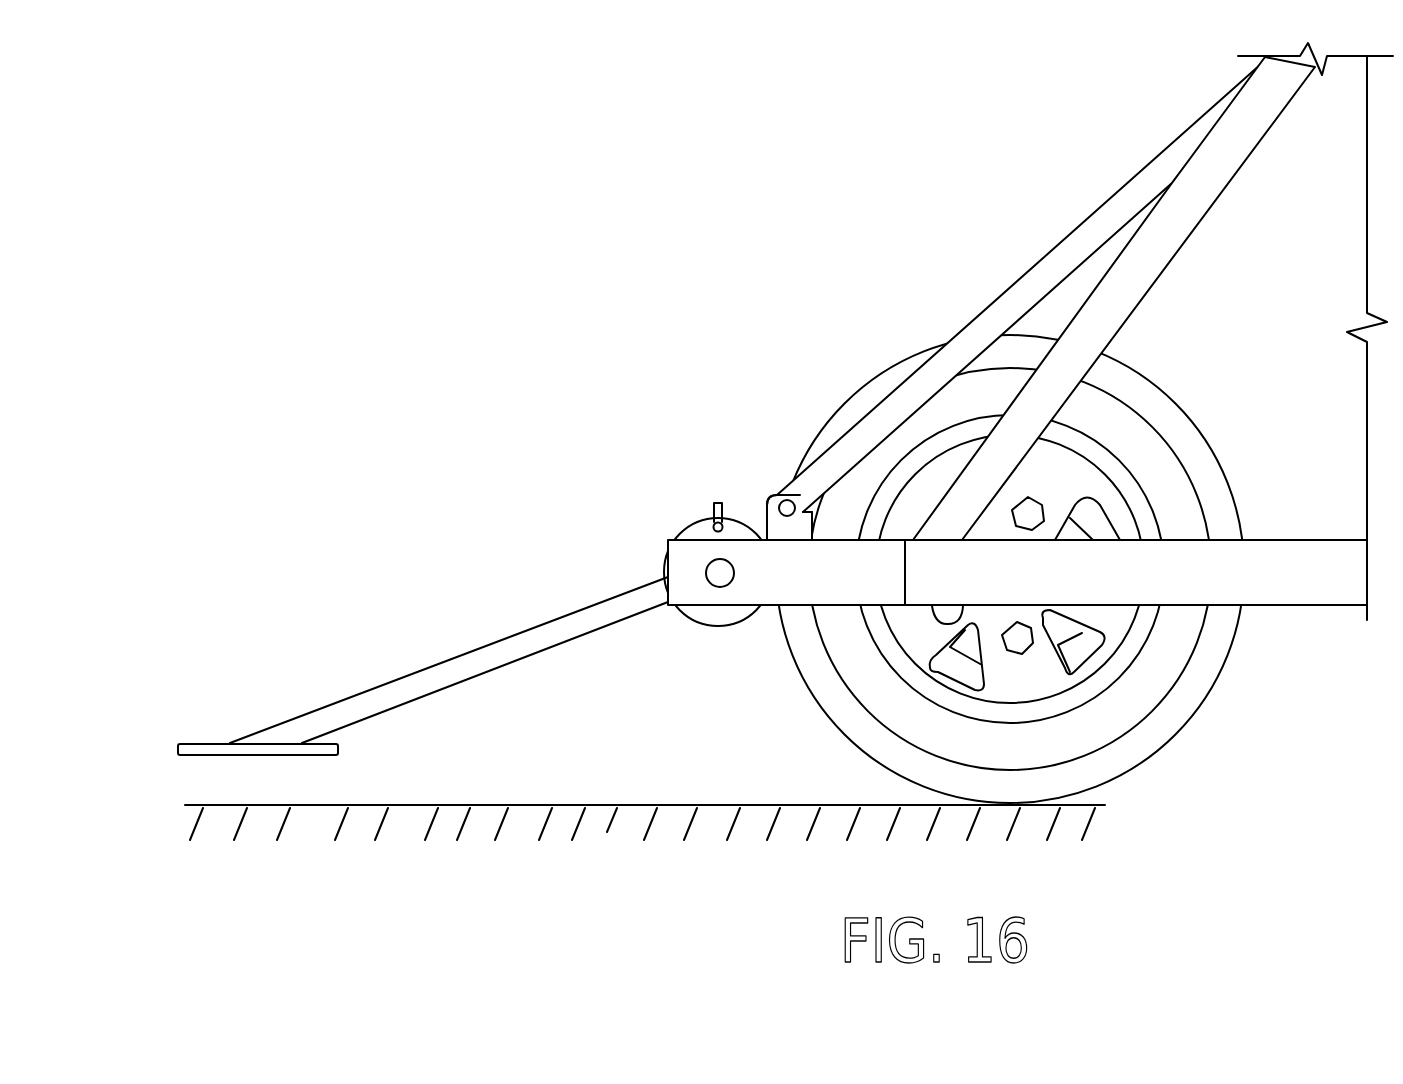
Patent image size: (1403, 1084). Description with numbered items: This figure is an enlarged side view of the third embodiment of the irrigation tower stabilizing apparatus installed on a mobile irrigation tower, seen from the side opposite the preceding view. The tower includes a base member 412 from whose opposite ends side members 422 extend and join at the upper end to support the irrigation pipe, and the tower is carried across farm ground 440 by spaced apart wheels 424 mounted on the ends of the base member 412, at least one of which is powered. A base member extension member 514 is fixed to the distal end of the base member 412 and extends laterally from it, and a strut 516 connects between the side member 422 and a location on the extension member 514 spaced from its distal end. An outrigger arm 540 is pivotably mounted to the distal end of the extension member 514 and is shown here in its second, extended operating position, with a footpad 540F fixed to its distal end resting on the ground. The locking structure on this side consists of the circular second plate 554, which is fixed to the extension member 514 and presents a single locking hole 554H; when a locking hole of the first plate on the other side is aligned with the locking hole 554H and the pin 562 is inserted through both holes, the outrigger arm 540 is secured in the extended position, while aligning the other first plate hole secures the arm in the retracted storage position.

The base member 412 is at (1232, 590).
The side member 422 is at (1167, 263).
The wheel 424 is at (1185, 420).
The farm ground 440 is at (603, 803).
The base member extension member 514 is at (848, 590).
The strut 516 is at (1055, 248).
The outrigger arm 540 is at (503, 647).
The footpad 540F is at (200, 743).
The second plate 554 is at (693, 530).
The second plate locking hole 554H is at (713, 528).
The pin 562 is at (727, 508).